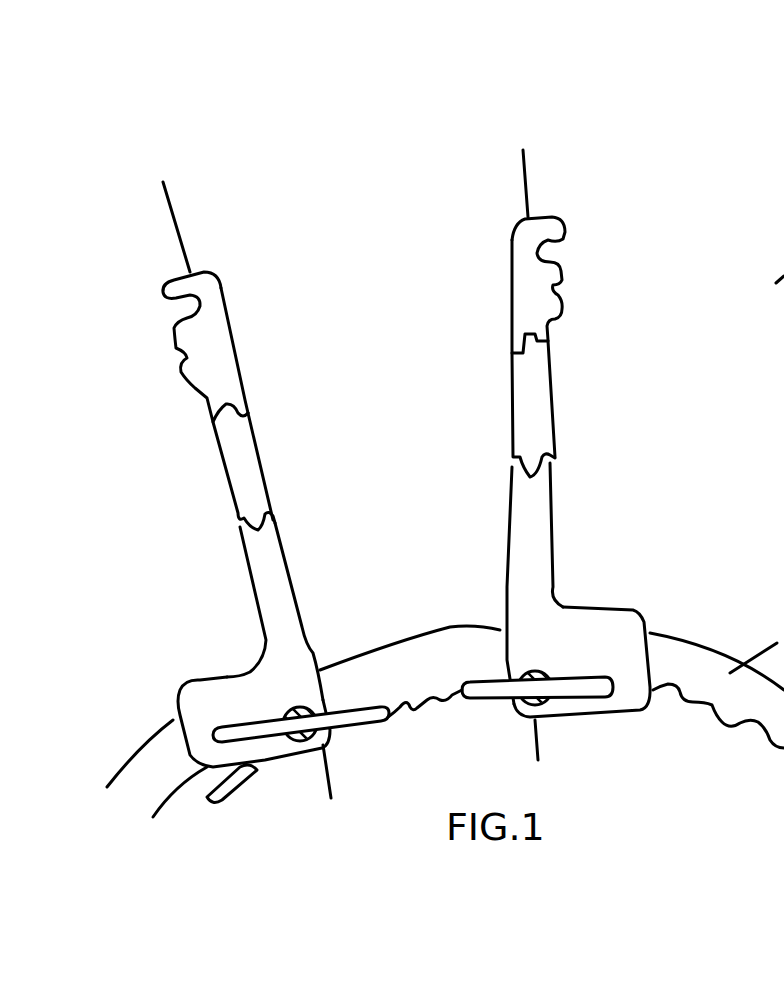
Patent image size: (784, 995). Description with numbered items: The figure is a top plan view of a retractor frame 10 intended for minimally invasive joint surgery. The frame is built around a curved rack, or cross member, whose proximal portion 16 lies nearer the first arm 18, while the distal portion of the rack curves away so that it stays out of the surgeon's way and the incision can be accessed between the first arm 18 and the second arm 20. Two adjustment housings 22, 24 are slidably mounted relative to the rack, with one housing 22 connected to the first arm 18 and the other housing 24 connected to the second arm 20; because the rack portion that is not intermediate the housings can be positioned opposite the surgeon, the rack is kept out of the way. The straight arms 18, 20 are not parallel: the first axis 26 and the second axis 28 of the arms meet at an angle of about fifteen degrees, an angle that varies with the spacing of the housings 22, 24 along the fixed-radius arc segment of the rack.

The retractor frame 10 is at (357, 227).
The proximal portion 16 is at (650, 633).
The first arm 18 is at (552, 533).
The second arm 20 is at (283, 580).
The adjustment housing 22 is at (593, 638).
The adjustment housing 24 is at (255, 691).
The first axis 26 is at (528, 180).
The second axis 28 is at (180, 238).